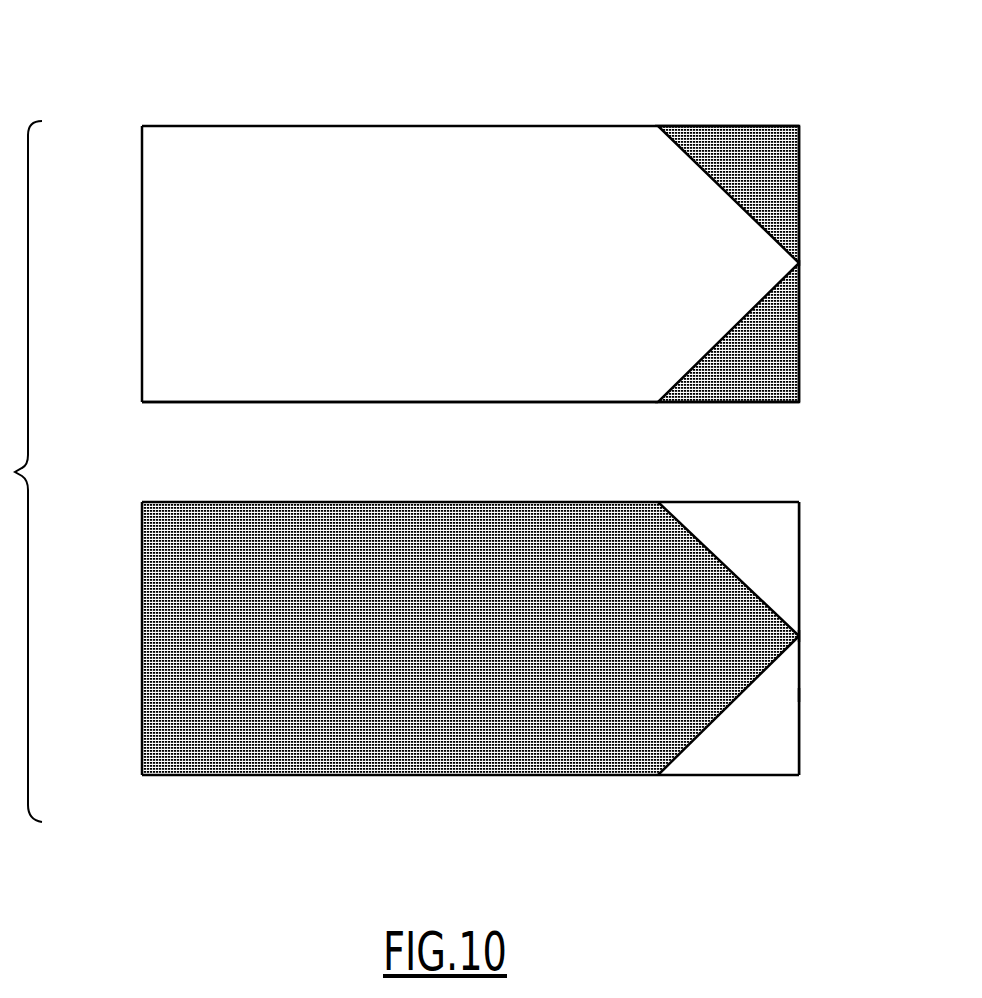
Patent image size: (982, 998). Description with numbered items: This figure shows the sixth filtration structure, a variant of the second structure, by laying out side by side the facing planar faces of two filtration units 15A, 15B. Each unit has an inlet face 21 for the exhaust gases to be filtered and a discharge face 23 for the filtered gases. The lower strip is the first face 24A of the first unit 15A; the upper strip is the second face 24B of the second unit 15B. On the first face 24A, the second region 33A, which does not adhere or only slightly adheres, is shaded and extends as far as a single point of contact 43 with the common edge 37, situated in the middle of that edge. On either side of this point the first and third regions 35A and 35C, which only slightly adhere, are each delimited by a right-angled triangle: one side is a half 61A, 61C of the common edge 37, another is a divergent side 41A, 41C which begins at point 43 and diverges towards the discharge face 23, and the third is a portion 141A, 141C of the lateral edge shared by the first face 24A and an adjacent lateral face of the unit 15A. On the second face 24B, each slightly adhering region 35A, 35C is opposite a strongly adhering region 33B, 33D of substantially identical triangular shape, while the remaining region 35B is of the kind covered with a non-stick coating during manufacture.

The first filtration unit 15A is at (256, 797).
The second filtration unit 15B is at (291, 100).
The inlet face 21 is at (140, 282).
The discharge face 23 is at (806, 295).
The first face 24A is at (401, 740).
The second face 24B is at (550, 178).
The second region 33A is at (416, 518).
The strongly adhering region 33B is at (778, 370).
The strongly adhering region 33D is at (778, 188).
The first region 35A is at (778, 760).
The region covered with non-stick coating 35B is at (418, 146).
The third region 35C is at (778, 533).
The common edge 37 is at (806, 695).
The divergent side 41A is at (678, 750).
The divergent side 41C is at (678, 526).
The point of contact 43 is at (800, 636).
The half of the common edge 61A is at (800, 720).
The half of the common edge 61C is at (800, 591).
The portion of the lateral edge 141A is at (724, 776).
The portion of the lateral edge 141C is at (724, 502).